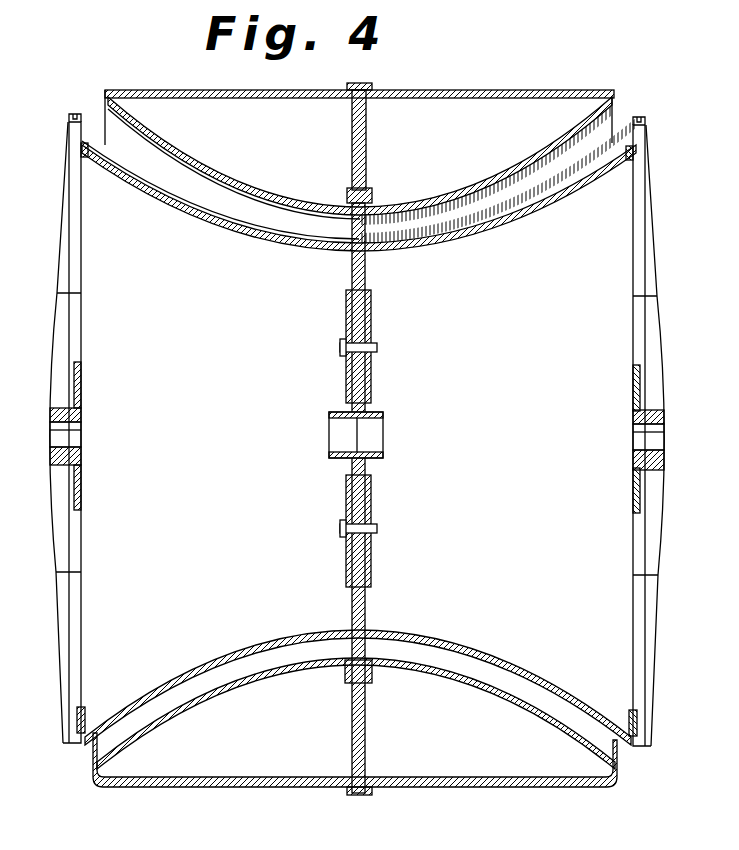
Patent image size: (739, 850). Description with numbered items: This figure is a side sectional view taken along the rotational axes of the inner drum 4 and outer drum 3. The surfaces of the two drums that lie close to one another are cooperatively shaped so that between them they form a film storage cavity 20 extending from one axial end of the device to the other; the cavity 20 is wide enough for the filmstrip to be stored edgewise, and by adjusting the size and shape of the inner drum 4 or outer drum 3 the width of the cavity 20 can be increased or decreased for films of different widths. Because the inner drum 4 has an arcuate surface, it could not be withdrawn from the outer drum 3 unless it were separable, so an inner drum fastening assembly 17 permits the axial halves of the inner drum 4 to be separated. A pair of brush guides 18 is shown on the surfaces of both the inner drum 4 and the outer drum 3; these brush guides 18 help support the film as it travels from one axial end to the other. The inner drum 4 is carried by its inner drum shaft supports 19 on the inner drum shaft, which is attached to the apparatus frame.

The outer drum 3 is at (133, 88).
The inner drum 4 is at (78, 178).
The inner drum fastening assembly 17 is at (343, 347).
The brush guides 18 is at (487, 187).
The inner drum shaft supports 19 is at (82, 417).
The film storage cavity 20 is at (113, 130).